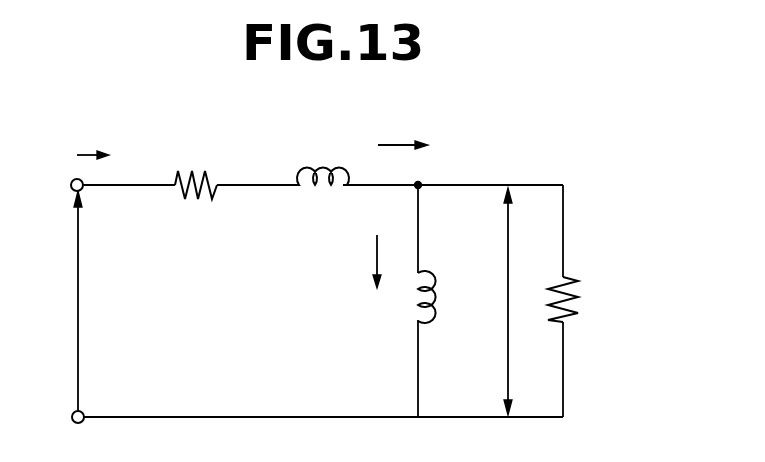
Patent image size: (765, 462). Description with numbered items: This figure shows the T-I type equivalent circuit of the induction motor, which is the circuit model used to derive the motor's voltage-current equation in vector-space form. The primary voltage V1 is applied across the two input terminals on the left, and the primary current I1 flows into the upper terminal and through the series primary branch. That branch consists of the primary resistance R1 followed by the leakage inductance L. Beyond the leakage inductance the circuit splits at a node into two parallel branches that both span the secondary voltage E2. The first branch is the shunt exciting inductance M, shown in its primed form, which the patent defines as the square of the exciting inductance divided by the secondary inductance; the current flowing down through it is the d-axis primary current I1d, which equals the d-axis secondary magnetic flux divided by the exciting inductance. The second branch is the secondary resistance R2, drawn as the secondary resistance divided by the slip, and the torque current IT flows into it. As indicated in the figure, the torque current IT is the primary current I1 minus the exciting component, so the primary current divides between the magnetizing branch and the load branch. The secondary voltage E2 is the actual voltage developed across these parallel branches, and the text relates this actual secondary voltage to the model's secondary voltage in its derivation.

The primary voltage V1 is at (60, 301).
The primary current I1 is at (105, 155).
The primary resistance R1 is at (196, 168).
The leakage inductance L is at (322, 161).
The torque current IT is at (583, 147).
The exciting inductance M is at (443, 301).
The d-axis primary current I1d is at (395, 326).
The secondary voltage E2 is at (508, 301).
The secondary resistance R2 is at (600, 301).